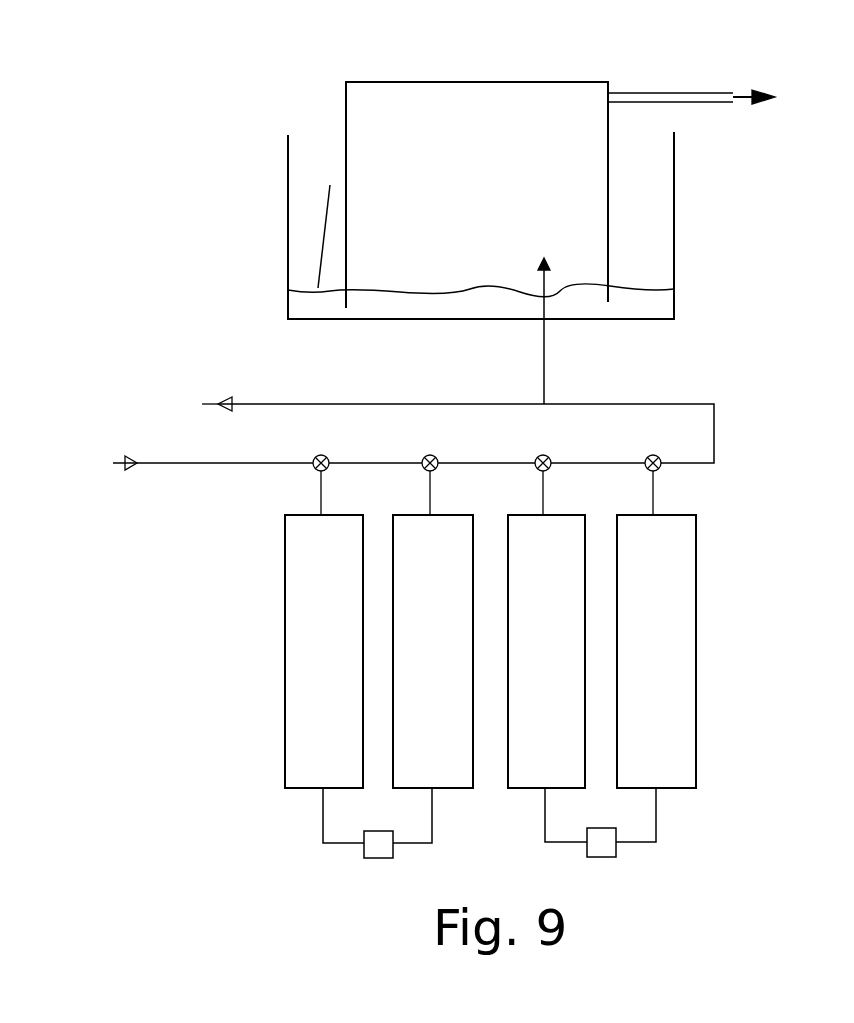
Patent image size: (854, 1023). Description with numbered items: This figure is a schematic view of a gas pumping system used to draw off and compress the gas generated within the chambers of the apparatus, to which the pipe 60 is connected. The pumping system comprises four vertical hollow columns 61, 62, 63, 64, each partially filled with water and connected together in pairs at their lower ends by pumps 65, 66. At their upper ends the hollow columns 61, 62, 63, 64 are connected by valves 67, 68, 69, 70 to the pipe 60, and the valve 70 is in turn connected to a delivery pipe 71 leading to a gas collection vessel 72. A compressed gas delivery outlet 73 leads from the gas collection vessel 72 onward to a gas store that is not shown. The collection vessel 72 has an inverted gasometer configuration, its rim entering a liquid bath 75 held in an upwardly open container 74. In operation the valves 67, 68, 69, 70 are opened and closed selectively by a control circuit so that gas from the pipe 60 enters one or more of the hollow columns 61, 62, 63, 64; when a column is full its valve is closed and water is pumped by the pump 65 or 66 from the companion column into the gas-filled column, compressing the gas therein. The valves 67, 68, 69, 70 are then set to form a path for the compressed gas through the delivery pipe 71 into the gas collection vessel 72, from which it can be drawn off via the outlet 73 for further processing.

The pipe 60 is at (225, 465).
The vertical hollow column 61 is at (285, 642).
The vertical hollow column 62 is at (407, 638).
The vertical hollow column 63 is at (526, 636).
The vertical hollow column 64 is at (665, 634).
The pump 65 is at (366, 855).
The pump 66 is at (616, 855).
The valve 67 is at (321, 471).
The valve 68 is at (430, 471).
The valve 69 is at (543, 471).
The valve 70 is at (653, 471).
The delivery pipe 71 is at (544, 345).
The gas collection vessel 72 is at (578, 82).
The compressed gas delivery outlet 73 is at (683, 93).
The upwardly open container 74 is at (288, 230).
The liquid bath 75 is at (330, 185).